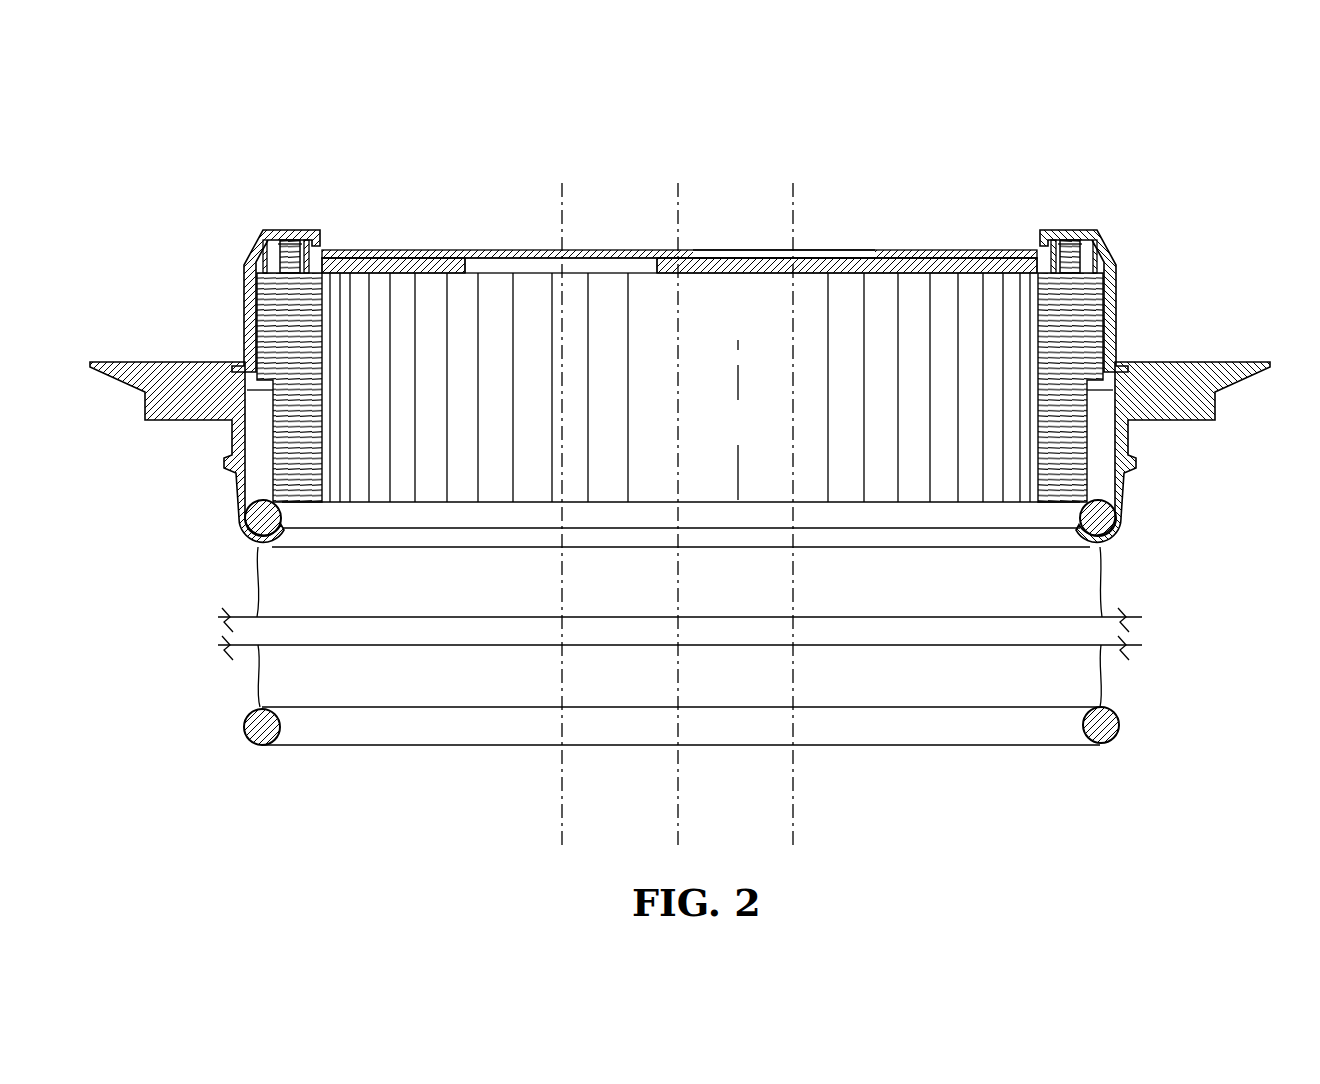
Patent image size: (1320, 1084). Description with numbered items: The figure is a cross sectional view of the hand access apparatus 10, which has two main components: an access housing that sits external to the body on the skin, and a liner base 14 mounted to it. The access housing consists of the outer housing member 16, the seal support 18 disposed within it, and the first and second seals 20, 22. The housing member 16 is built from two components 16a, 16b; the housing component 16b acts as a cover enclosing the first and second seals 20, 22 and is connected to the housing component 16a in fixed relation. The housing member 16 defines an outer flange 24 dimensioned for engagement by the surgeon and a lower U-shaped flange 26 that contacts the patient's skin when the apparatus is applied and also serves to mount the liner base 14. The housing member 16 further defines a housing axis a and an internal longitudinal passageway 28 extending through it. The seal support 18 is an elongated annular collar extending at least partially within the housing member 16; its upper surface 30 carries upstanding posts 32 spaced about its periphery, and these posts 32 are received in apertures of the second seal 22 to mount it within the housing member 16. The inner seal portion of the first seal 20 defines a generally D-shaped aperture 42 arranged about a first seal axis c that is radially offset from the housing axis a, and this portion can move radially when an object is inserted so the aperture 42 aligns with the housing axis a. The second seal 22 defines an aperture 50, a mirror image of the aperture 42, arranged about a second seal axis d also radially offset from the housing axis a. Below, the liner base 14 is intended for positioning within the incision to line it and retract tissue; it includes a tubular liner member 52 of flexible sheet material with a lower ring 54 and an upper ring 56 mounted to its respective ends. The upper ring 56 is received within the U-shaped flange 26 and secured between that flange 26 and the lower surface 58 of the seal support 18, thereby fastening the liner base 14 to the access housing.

The hand access apparatus 10 is at (226, 281).
The liner base 14 is at (255, 680).
The housing member 16 is at (180, 423).
The housing component 16a is at (1128, 462).
The housing component 16b is at (262, 250).
The seal support 18 is at (280, 332).
The first seal 20 is at (430, 262).
The second seal 22 is at (923, 265).
The outer flange 24 is at (1243, 390).
The U-shaped flange 26 is at (1100, 547).
The internal longitudinal passageway 28 is at (378, 330).
The upper surface 30 is at (1090, 240).
The upstanding posts 32 is at (1068, 255).
The aperture 42 is at (755, 255).
The aperture 50 is at (610, 268).
The liner member 52 is at (255, 578).
The lower ring 54 is at (262, 742).
The upper ring 56 is at (253, 517).
The lower surface 58 is at (1058, 503).
The housing axis a is at (678, 198).
The first seal axis c is at (794, 198).
The second seal axis d is at (562, 826).